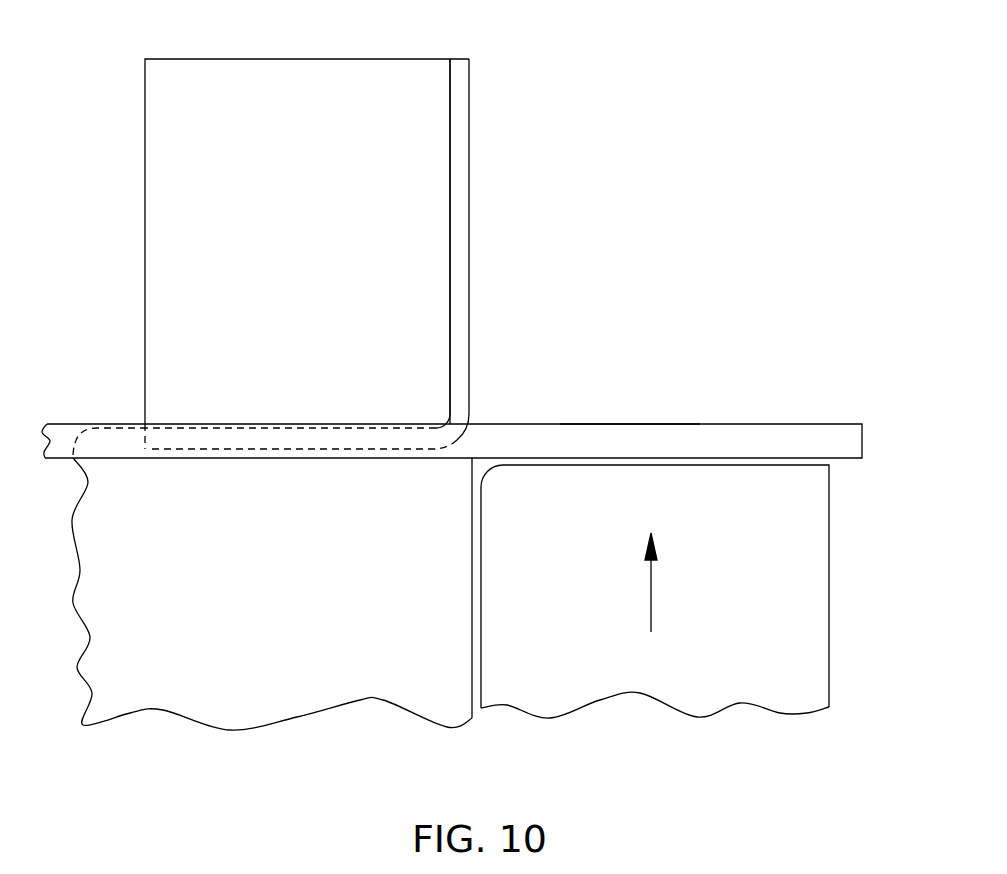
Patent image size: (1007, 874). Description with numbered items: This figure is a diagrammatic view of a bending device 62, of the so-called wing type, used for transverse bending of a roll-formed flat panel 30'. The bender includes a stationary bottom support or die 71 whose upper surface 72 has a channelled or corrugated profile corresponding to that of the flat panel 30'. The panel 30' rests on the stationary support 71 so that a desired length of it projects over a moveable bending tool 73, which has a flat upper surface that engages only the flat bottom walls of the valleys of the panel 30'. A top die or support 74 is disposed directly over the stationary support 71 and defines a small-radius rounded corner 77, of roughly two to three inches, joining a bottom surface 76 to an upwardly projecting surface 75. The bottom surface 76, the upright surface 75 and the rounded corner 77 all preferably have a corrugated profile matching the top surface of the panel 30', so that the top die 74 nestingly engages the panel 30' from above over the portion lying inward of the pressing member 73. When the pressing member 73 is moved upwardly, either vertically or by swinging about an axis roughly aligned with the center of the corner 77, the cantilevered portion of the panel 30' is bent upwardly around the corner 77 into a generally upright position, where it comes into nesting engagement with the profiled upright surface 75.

The roll-formed flat panel 30' is at (452, 408).
The bending device 62 is at (578, 288).
The stationary bottom support or die 71 is at (257, 688).
The upper surface 72 is at (108, 428).
The moveable bending tool 73 is at (553, 690).
The top die or support 74 is at (163, 279).
The upwardly projecting surface 75 is at (457, 213).
The bottom surface 76 is at (343, 450).
The rounded corner 77 is at (455, 418).